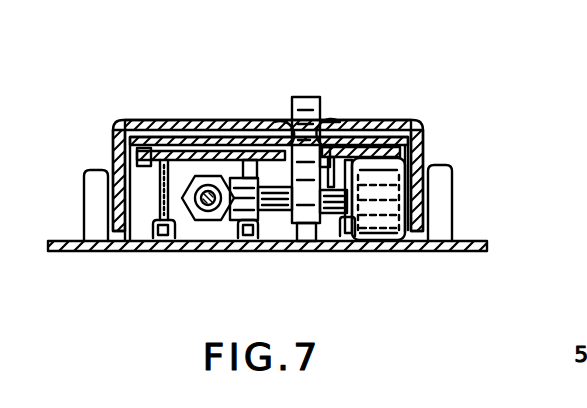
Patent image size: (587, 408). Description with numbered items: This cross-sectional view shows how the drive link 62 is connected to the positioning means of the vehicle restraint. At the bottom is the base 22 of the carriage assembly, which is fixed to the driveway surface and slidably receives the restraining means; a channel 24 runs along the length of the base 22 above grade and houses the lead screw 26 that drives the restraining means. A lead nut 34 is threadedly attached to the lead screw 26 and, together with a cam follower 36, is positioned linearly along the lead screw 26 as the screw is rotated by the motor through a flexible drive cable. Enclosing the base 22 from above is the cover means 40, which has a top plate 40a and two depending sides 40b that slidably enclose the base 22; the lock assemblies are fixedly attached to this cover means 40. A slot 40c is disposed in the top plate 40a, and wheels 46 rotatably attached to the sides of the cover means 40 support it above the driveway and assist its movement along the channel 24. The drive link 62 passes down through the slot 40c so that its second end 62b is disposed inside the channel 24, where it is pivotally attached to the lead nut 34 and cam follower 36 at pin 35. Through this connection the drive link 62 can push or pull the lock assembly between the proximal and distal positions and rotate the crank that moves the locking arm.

The base 22 is at (167, 143).
The channel 24 is at (333, 120).
The lead screw 26 is at (207, 212).
The lead nut 34 is at (225, 216).
The pin 35 is at (337, 228).
The cam follower 36 is at (380, 243).
The cover means 40 is at (316, 137).
The top plate 40a is at (185, 120).
The depending sides 40b is at (113, 140).
The slot 40c is at (285, 127).
The wheels 46 is at (90, 167).
The drive link 62 is at (310, 97).
The second end 62b is at (310, 224).